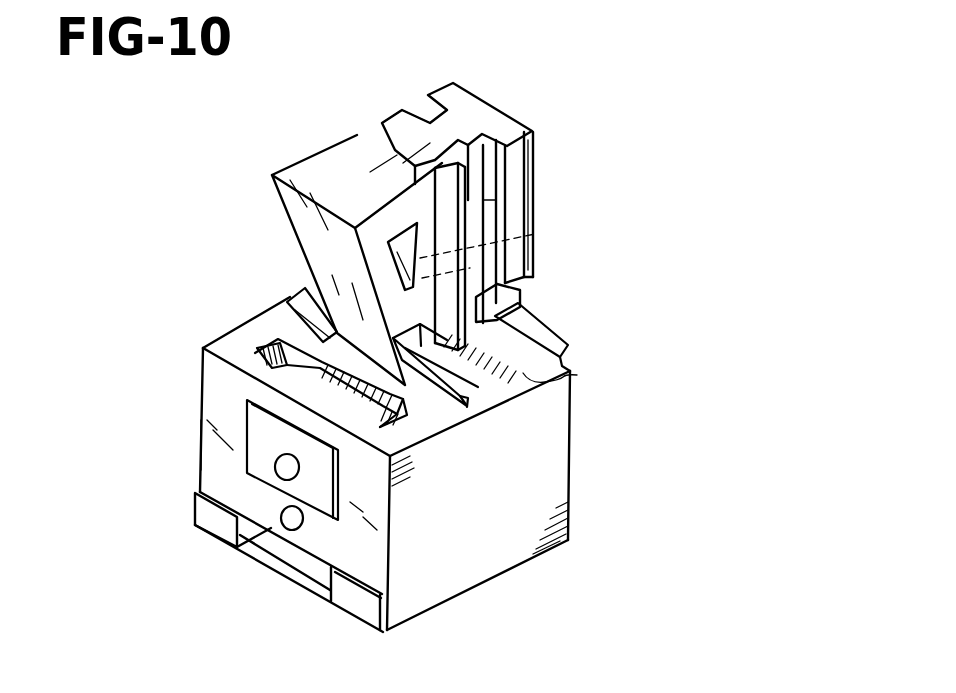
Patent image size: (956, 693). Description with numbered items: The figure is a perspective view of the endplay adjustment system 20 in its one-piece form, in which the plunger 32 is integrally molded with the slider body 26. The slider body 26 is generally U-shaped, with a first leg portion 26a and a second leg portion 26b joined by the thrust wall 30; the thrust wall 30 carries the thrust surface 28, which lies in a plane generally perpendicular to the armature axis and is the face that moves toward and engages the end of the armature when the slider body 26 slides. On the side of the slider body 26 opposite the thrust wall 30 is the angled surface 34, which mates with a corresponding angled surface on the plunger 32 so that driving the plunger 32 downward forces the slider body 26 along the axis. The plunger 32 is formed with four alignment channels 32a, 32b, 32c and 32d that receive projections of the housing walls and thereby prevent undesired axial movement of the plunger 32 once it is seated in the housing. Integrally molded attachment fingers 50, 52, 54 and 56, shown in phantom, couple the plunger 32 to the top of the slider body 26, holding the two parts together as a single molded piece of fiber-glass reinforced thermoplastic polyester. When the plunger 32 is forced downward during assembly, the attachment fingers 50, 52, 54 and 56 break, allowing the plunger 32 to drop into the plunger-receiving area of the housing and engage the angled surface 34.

The endplay adjustment system 20 is at (250, 155).
The slider body 26 is at (557, 452).
The first leg portion 26a is at (267, 318).
The second leg portion 26b is at (577, 375).
The thrust surface 28 is at (247, 450).
The thrust wall 30 is at (210, 387).
The plunger 32 is at (466, 185).
The alignment channel 32a is at (428, 96).
The alignment channel 32b is at (380, 132).
The alignment channel 32c is at (445, 197).
The alignment channel 32d is at (527, 127).
The angled surface 34 is at (237, 325).
The attachment finger 50 is at (550, 312).
The attachment finger 52 is at (465, 407).
The attachment finger 54 is at (287, 290).
The attachment finger 56 is at (530, 235).